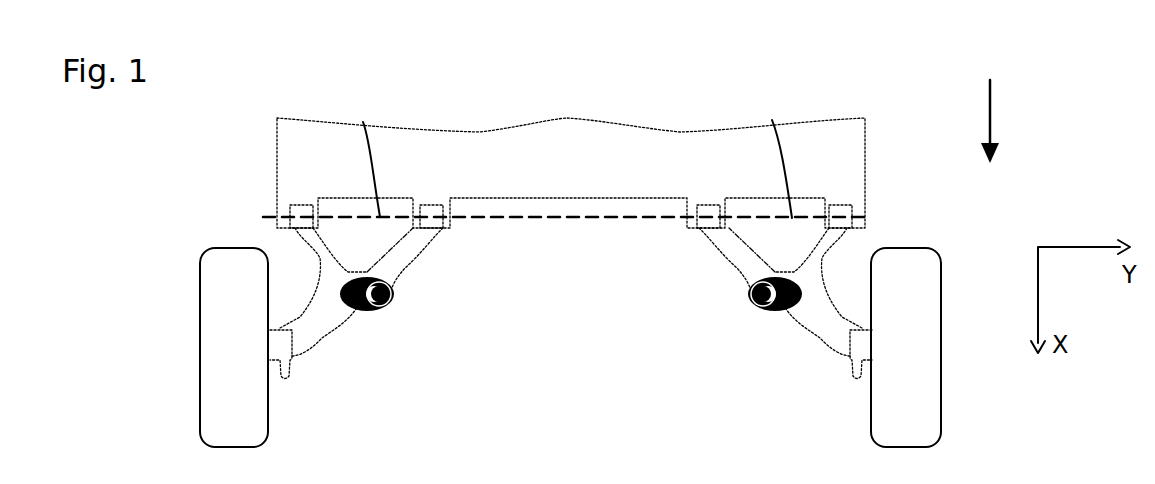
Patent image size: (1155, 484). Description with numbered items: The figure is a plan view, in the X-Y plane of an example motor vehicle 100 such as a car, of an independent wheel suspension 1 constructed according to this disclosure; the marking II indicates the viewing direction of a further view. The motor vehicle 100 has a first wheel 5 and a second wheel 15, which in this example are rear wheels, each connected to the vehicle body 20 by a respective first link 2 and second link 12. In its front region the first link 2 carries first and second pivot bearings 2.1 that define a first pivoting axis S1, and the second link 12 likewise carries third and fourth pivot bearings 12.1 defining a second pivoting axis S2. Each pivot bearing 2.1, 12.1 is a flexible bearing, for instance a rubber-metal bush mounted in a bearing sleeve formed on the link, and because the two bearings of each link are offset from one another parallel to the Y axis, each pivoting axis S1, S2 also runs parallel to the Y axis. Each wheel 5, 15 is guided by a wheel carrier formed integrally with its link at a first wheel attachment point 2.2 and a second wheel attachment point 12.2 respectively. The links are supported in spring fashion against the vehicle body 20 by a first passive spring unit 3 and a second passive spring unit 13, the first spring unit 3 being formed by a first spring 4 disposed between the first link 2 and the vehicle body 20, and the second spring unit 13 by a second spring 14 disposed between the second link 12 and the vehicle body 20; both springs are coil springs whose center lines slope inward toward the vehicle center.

The motor vehicle 100 is at (567, 78).
The independent wheel suspension 1 is at (236, 211).
The first link 2 is at (413, 258).
The first and second pivot bearings 2.1 is at (284, 200).
The first wheel attachment point 2.2 is at (298, 388).
The first passive spring unit 3 is at (406, 332).
The first spring 4 is at (366, 312).
The first wheel 5 is at (234, 347).
The second link 12 is at (738, 263).
The third and fourth pivot bearings 12.1 is at (702, 190).
The second wheel attachment point 12.2 is at (846, 385).
The second passive spring unit 13 is at (736, 332).
The second spring 14 is at (775, 312).
The second wheel 15 is at (906, 347).
The vehicle body 20 is at (571, 173).
The first pivoting axis S1 is at (362, 155).
The second pivoting axis S2 is at (774, 155).
The viewing direction of section II is at (999, 121).